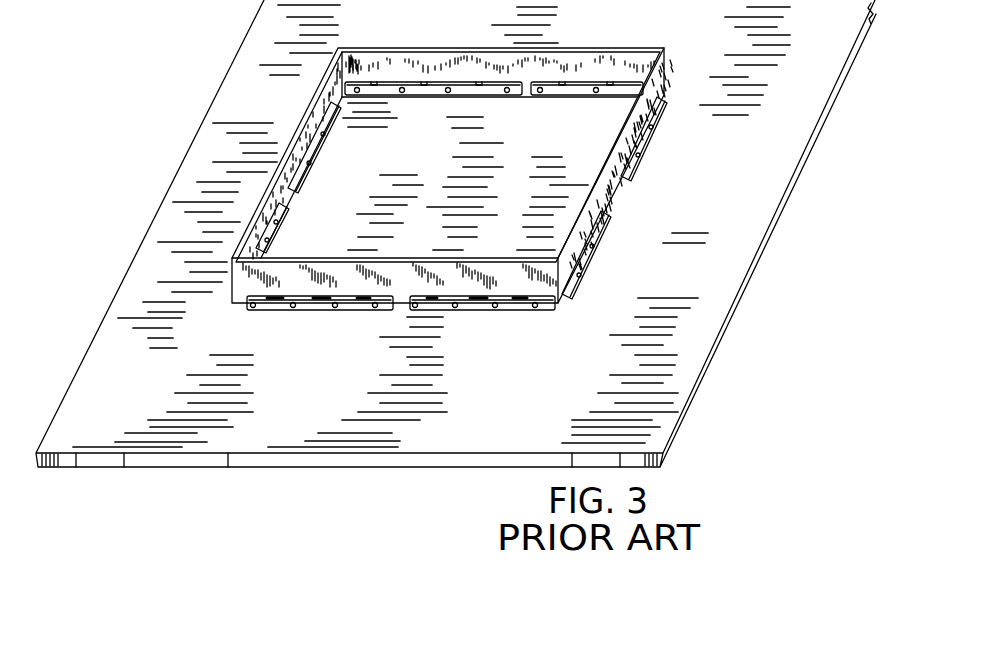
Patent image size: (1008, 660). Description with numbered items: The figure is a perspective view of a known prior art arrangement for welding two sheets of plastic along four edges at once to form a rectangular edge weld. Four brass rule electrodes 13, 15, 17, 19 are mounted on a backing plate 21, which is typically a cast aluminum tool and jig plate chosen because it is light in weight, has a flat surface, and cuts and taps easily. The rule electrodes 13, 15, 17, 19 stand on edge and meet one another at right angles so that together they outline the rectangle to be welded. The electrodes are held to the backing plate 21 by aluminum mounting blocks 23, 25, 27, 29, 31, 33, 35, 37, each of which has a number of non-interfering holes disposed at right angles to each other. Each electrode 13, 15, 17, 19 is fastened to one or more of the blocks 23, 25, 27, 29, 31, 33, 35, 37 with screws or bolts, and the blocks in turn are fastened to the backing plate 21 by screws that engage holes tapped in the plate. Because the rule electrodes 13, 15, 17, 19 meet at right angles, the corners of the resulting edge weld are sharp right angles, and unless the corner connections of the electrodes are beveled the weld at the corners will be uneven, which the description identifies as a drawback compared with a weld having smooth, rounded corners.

The brass rule electrode 13 is at (247, 287).
The brass rule electrode 15 is at (612, 192).
The brass rule electrode 17 is at (583, 57).
The brass rule electrode 19 is at (305, 123).
The backing plate 21 is at (565, 366).
The aluminum mounting block 23 is at (325, 305).
The aluminum mounting block 25 is at (472, 307).
The aluminum mounting block 27 is at (590, 257).
The aluminum mounting block 29 is at (652, 135).
The aluminum mounting block 31 is at (562, 97).
The aluminum mounting block 33 is at (470, 96).
The aluminum mounting block 35 is at (319, 142).
The aluminum mounting block 37 is at (277, 234).